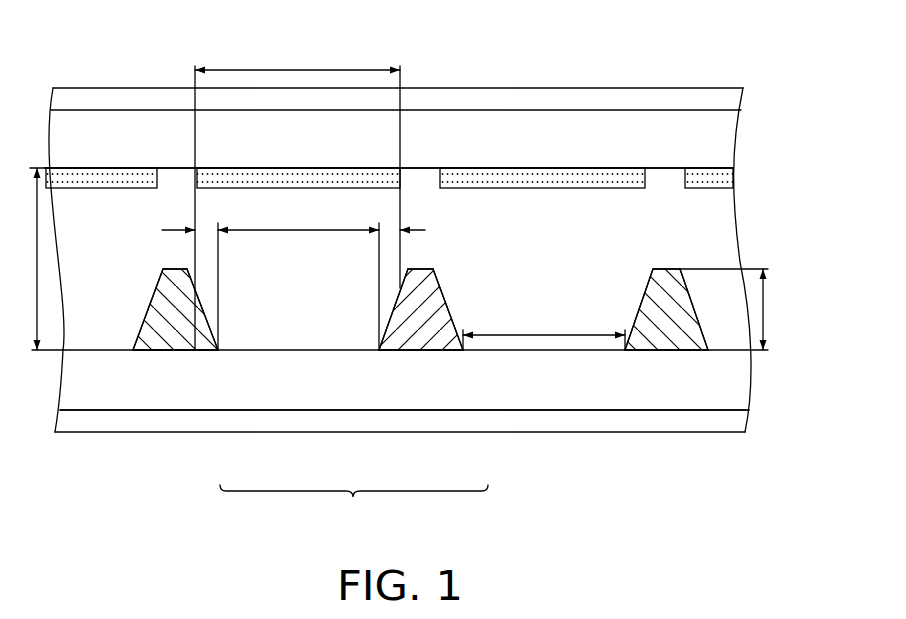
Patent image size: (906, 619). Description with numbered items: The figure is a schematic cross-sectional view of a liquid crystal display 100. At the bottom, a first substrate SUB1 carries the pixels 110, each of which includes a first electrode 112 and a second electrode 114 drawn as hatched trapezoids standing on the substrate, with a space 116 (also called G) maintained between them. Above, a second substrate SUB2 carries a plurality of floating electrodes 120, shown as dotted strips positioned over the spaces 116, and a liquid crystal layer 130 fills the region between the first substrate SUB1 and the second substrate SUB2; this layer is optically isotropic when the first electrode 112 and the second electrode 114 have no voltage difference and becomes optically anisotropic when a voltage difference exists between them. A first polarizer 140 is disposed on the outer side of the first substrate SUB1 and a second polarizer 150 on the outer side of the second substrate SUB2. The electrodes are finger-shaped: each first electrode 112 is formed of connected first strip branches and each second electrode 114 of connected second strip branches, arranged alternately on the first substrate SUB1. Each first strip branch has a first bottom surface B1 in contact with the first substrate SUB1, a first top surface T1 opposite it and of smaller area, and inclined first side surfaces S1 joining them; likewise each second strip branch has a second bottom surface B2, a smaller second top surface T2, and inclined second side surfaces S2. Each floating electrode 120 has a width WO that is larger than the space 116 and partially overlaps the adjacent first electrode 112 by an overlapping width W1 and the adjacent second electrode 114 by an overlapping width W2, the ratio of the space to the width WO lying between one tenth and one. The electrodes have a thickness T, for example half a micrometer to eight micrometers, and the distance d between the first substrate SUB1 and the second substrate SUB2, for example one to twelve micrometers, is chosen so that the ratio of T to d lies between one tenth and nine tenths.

The liquid crystal display 100 is at (733, 471).
The pixel 110 is at (354, 508).
The first electrode 112 is at (427, 325).
The second electrode 114 is at (643, 298).
The space 116 is at (421, 272).
The floating electrode 120 is at (96, 172).
The liquid crystal layer 130 is at (728, 203).
The first polarizer 140 is at (728, 421).
The second polarizer 150 is at (728, 101).
The first substrate SUB1 is at (633, 397).
The second substrate SUB2 is at (633, 153).
The first top surface T1 is at (419, 266).
The second top surface T2 is at (176, 266).
The first side surface S1 is at (390, 320).
The second side surface S2 is at (144, 320).
The first bottom surface B1 is at (413, 352).
The second bottom surface B2 is at (176, 352).
The width of floating electrode WO is at (297, 195).
The overlapping width with first electrode W1 is at (380, 229).
The overlapping width with second electrode W2 is at (217, 229).
The distance between substrates d is at (30, 259).
The electrode thickness T is at (734, 309).